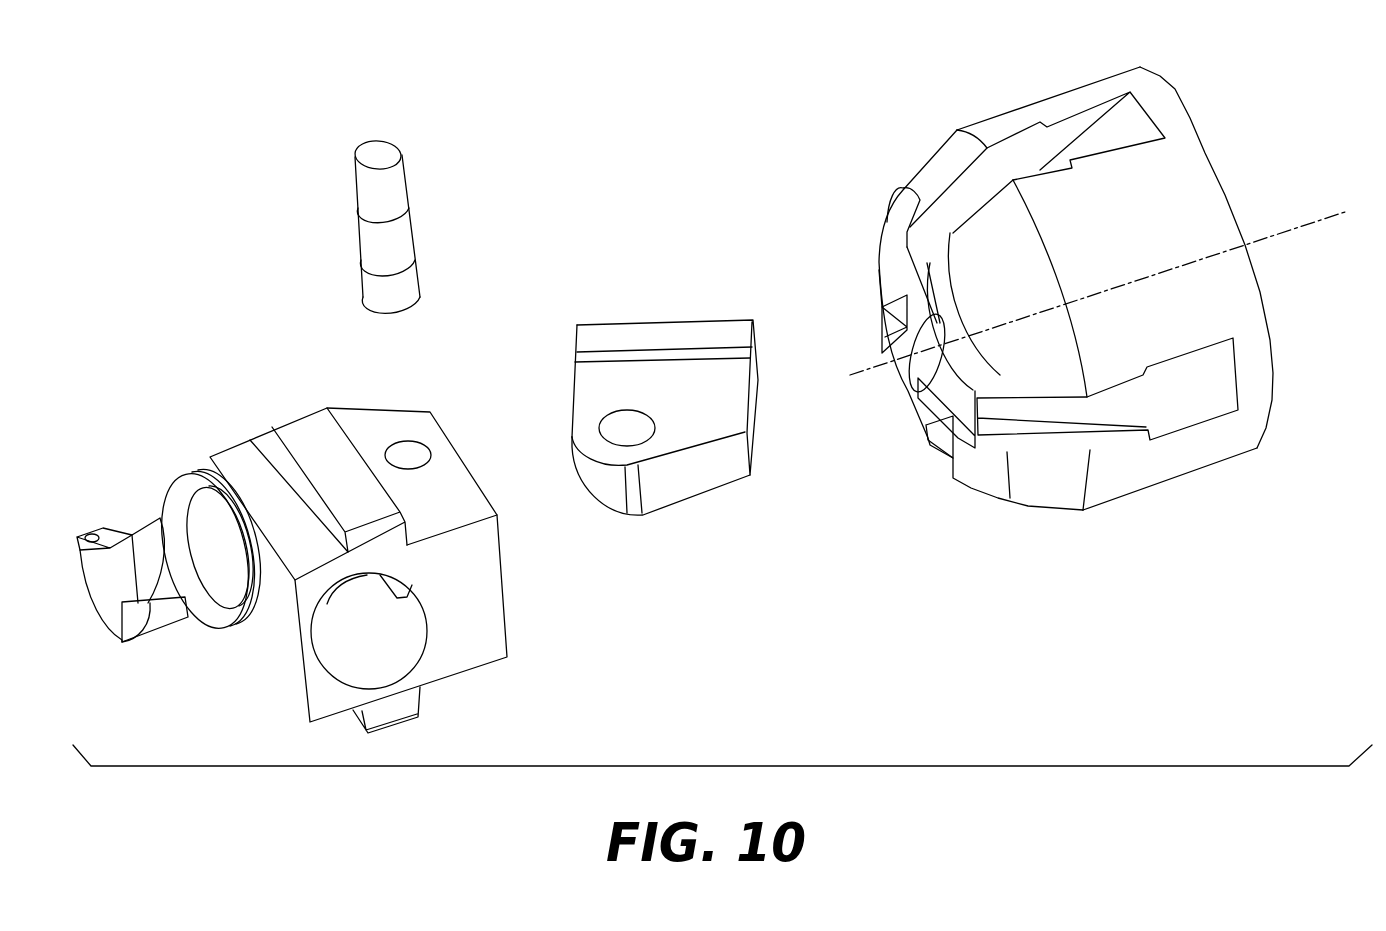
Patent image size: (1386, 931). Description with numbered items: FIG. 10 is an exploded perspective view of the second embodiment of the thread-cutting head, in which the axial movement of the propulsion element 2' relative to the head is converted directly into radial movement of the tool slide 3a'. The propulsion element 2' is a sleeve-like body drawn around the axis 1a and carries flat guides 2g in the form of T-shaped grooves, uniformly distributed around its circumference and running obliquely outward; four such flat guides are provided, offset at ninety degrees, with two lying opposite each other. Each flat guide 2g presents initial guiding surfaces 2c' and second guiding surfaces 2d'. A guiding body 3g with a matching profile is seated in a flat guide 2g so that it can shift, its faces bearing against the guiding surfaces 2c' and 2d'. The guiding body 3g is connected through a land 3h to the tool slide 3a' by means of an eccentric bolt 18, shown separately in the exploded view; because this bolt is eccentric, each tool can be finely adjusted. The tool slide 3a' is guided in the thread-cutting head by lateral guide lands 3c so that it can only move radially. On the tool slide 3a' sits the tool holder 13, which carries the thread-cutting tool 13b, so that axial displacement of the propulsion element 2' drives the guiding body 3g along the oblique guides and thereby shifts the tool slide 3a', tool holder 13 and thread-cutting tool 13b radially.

The axis 1a is at (1342, 222).
The propulsion element 2' is at (1091, 288).
The initial guiding surfaces 2c' is at (941, 256).
The second guiding surfaces 2d' is at (1107, 241).
The flat guides 2g is at (871, 282).
The tool slide 3a' is at (358, 561).
The lateral guide lands 3c is at (303, 425).
The guiding body 3g is at (740, 330).
The land 3h is at (730, 400).
The tool holder 13 is at (168, 632).
The thread-cutting tool 13b is at (77, 535).
The eccentric bolt 18 is at (423, 213).